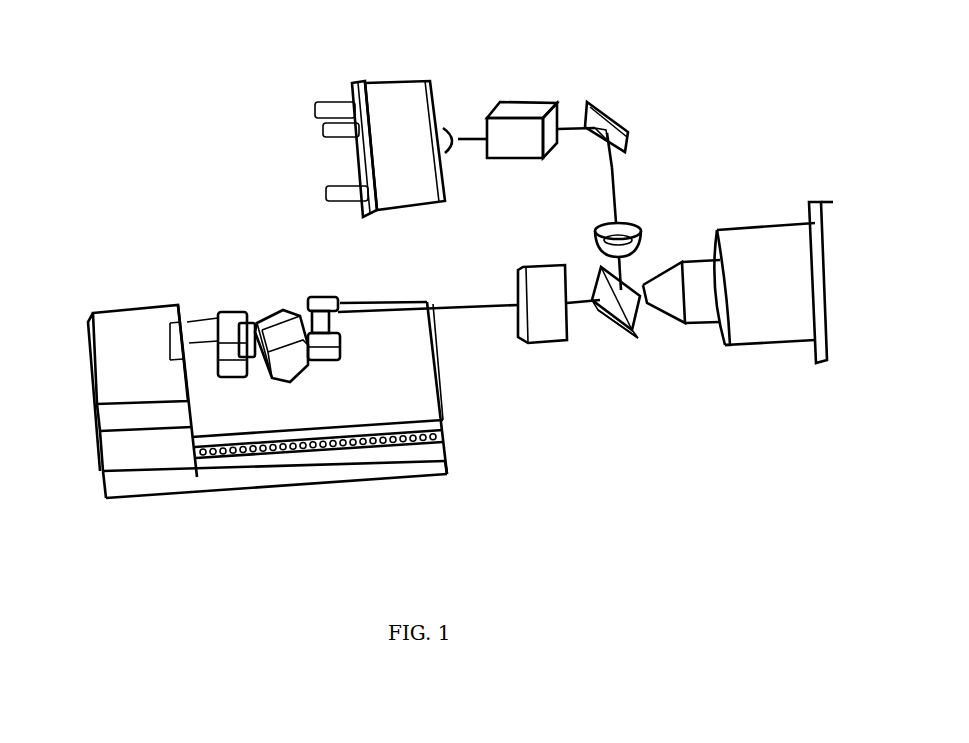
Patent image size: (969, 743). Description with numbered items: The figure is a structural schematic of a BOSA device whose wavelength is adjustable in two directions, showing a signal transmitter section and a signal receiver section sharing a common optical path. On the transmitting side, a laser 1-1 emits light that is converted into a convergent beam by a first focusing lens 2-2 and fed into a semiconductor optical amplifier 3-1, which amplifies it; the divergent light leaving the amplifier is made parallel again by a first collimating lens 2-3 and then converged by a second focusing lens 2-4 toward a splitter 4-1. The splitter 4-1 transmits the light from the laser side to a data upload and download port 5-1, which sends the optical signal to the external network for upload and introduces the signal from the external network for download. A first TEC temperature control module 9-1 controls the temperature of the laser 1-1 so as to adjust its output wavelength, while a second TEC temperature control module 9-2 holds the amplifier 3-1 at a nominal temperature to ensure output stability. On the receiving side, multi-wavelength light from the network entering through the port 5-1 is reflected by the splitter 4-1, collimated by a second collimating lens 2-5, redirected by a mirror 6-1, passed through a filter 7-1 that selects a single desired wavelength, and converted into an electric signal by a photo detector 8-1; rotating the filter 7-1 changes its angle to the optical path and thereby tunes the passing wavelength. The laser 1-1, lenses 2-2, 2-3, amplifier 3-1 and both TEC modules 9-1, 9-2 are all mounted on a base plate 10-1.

The laser 1-1 is at (127, 308).
The first focusing lens 2-2 is at (246, 378).
The first collimating lens 2-3 is at (328, 362).
The second focusing lens 2-4 is at (545, 322).
The second collimating lens 2-5 is at (627, 222).
The semiconductor optical amplifier (SOA) 3-1 is at (293, 383).
The splitter 4-1 is at (620, 305).
The data upload and download port 5-1 is at (707, 300).
The mirror 6-1 is at (612, 125).
The filter 7-1 is at (521, 108).
The photo detector 8-1 is at (395, 100).
The first TEC temperature control module 9-1 is at (130, 443).
The second TEC temperature control module 9-2 is at (423, 440).
The base plate 10-1 is at (138, 482).